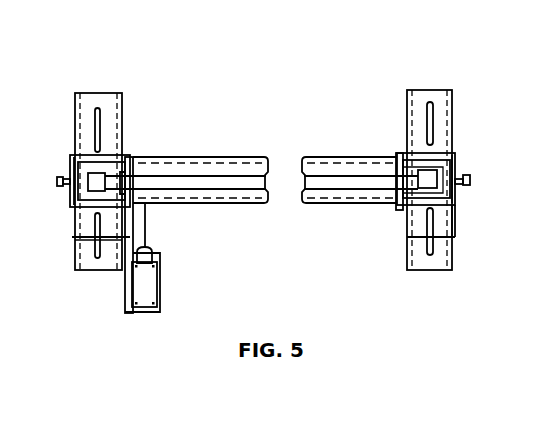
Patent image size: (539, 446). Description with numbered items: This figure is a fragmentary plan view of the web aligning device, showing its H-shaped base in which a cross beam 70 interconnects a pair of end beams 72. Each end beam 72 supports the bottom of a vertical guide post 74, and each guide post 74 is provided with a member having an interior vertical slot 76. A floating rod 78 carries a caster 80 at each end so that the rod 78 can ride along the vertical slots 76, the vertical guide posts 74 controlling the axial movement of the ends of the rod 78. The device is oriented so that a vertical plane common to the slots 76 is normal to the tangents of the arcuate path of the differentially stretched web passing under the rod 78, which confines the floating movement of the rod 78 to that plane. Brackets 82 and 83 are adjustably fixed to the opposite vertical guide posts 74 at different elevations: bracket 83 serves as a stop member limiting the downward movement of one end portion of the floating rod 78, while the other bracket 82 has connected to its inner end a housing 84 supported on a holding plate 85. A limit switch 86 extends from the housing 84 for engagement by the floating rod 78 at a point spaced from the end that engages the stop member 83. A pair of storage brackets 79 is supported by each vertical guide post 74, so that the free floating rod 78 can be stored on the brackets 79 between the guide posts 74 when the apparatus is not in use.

The cross beam 70 is at (226, 204).
The end beam 72 is at (123, 108).
The vertical guide post 74 is at (456, 200).
The vertical slot 76 is at (119, 169).
The floating rod 78 is at (228, 182).
The storage bracket 79 is at (87, 238).
The caster 80 is at (83, 173).
The bracket 82 is at (68, 198).
The bracket 83 is at (456, 161).
The housing 84 is at (163, 292).
The holding plate 85 is at (146, 235).
The limit switch 86 is at (147, 166).